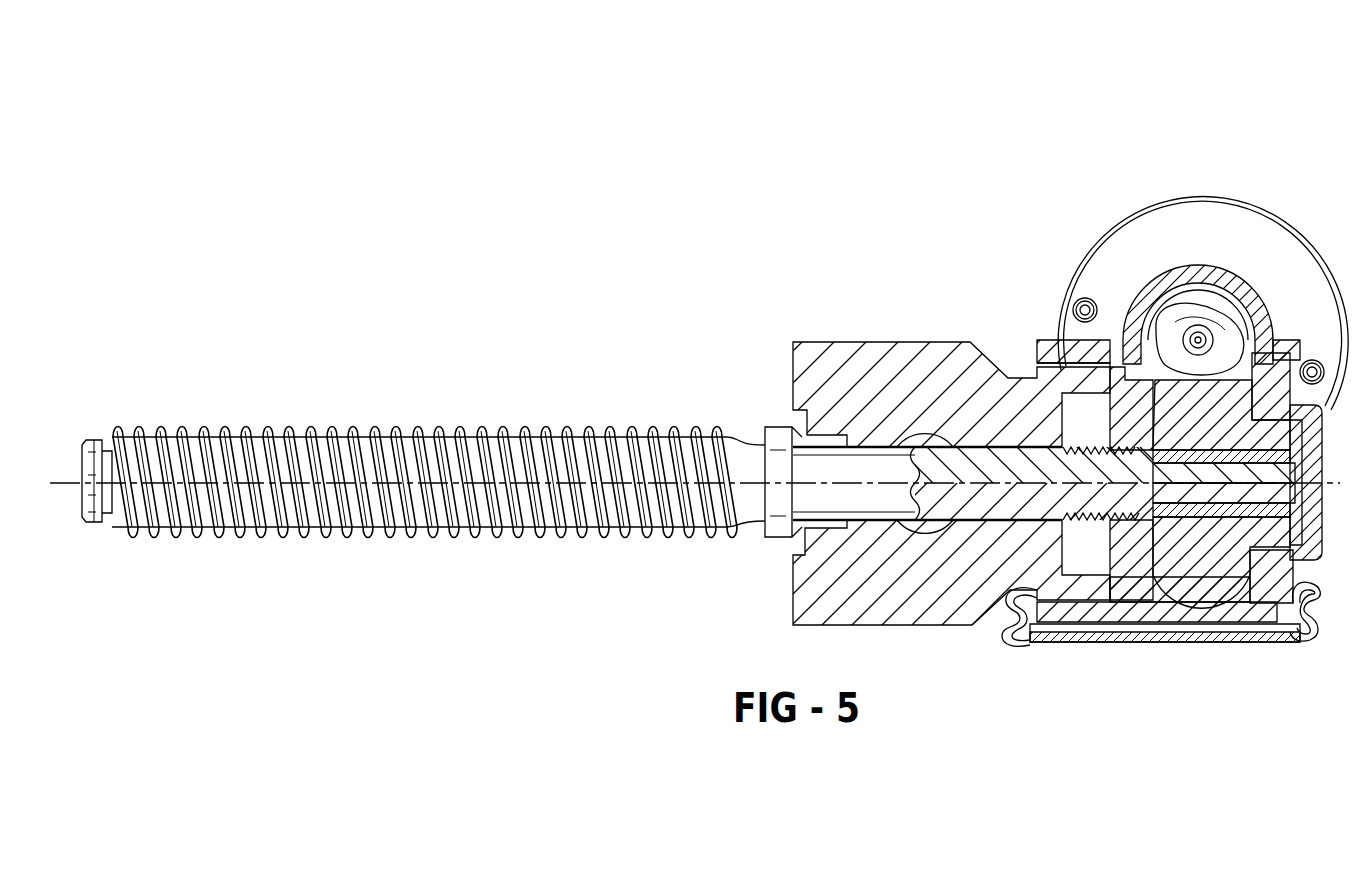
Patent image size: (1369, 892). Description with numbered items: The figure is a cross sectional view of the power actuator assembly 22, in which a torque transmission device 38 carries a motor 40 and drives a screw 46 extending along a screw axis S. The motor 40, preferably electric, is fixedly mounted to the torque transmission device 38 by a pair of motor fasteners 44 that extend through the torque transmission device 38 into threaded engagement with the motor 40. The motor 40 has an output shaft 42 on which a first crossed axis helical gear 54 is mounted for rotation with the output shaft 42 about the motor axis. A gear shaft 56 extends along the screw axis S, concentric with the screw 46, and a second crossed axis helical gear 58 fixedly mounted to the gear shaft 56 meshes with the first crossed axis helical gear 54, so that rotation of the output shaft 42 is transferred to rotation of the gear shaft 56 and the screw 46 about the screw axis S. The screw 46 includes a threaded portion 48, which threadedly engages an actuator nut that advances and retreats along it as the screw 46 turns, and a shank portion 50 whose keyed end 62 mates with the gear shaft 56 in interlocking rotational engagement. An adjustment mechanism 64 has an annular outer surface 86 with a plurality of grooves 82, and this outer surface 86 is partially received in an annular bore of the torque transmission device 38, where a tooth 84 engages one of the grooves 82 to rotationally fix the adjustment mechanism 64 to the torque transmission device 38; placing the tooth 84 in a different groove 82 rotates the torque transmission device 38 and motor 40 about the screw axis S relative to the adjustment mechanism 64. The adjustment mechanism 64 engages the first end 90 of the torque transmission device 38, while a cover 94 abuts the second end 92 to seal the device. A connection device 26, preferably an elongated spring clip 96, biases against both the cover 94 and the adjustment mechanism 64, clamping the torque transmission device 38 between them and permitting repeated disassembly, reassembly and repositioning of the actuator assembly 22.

The screw axis S is at (62, 483).
The actuator assembly 22 is at (1195, 172).
The connection device 26 is at (1222, 643).
The torque transmission device 38 is at (1080, 602).
The motor 40 is at (1266, 214).
The output shaft 42 is at (1205, 338).
The motor fasteners 44 is at (1075, 305).
The screw 46 is at (372, 432).
The threaded portion 48 is at (615, 538).
The shank portion 50 is at (925, 440).
The first crossed axis helical gear 54 is at (1190, 318).
The gear shaft 56 is at (1275, 432).
The second crossed axis helical gear 58 is at (1207, 338).
The keyed end 62 is at (1268, 476).
The adjustment mechanism 64 is at (950, 342).
The grooves 82 is at (1103, 365).
The tooth 84 is at (1040, 350).
The outer surface 86 is at (906, 342).
The first end 90 is at (1010, 375).
The second end 92 is at (1288, 636).
The cover 94 is at (1316, 552).
The elongated spring clip 96 is at (1175, 645).